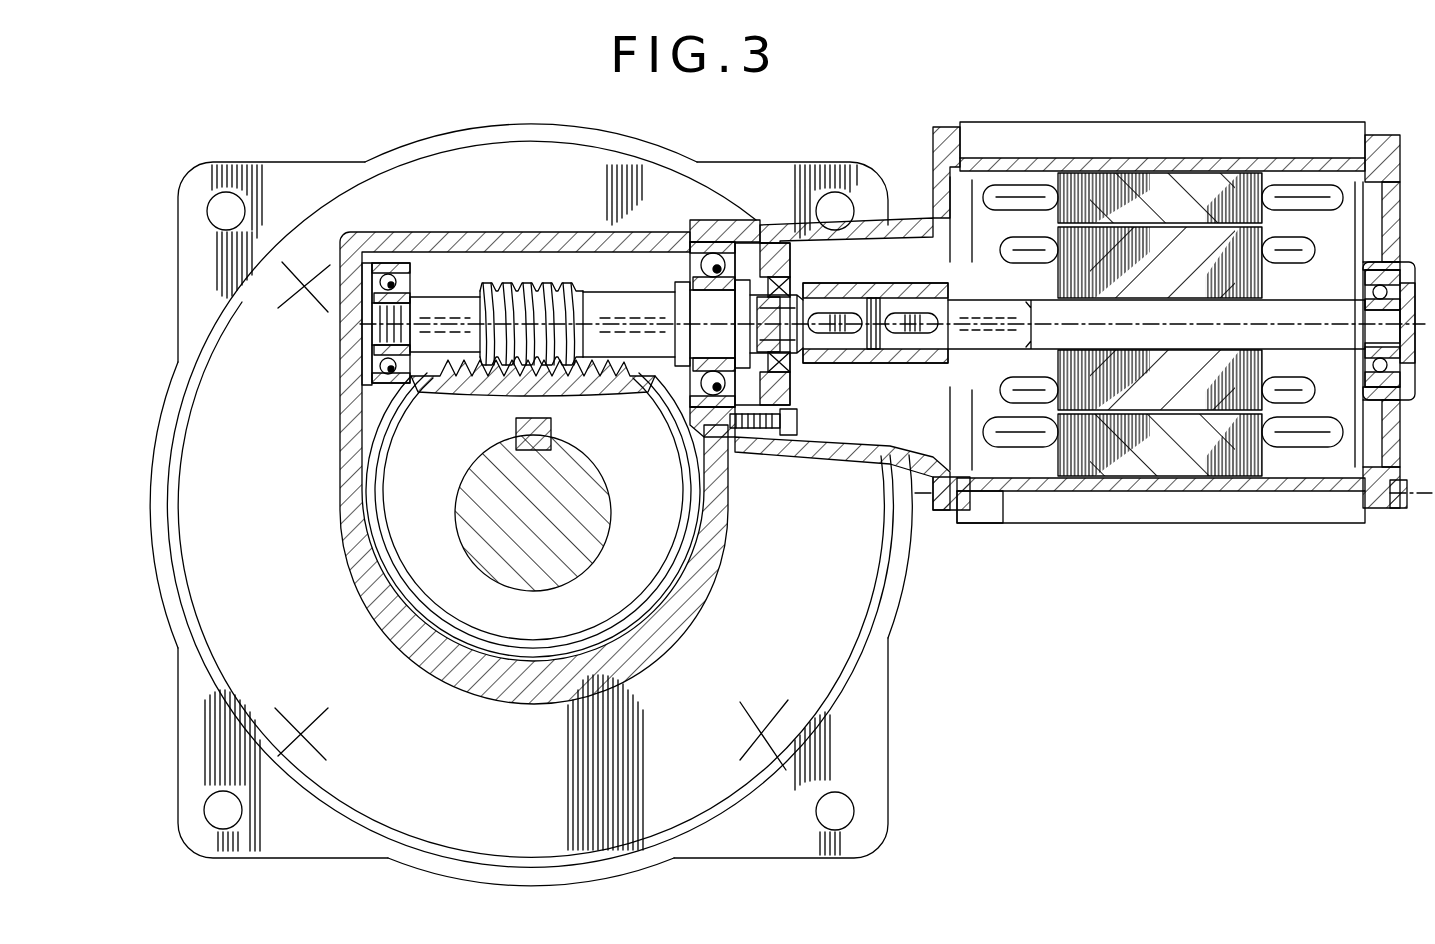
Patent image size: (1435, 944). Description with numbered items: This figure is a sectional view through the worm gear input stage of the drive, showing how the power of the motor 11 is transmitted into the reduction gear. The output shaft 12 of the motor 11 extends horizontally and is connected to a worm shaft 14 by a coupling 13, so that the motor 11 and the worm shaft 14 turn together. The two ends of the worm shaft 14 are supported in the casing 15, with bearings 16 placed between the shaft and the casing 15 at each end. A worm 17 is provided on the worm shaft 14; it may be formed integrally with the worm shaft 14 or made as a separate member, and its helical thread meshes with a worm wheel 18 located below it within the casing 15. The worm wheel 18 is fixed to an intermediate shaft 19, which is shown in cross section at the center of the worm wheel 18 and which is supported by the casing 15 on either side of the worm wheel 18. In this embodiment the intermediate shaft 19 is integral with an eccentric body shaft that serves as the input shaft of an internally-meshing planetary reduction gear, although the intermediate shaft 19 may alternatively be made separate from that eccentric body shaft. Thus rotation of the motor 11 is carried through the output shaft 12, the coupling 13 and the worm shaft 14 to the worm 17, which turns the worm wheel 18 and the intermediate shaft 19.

The motor 11 is at (1155, 192).
The output shaft 12 is at (970, 303).
The coupling 13 is at (911, 284).
The worm shaft 14 is at (618, 307).
The casing 15 is at (484, 233).
The bearings 16 is at (405, 282).
The worm 17 is at (506, 288).
The worm wheel 18 is at (680, 557).
The intermediate shaft 19 is at (478, 537).